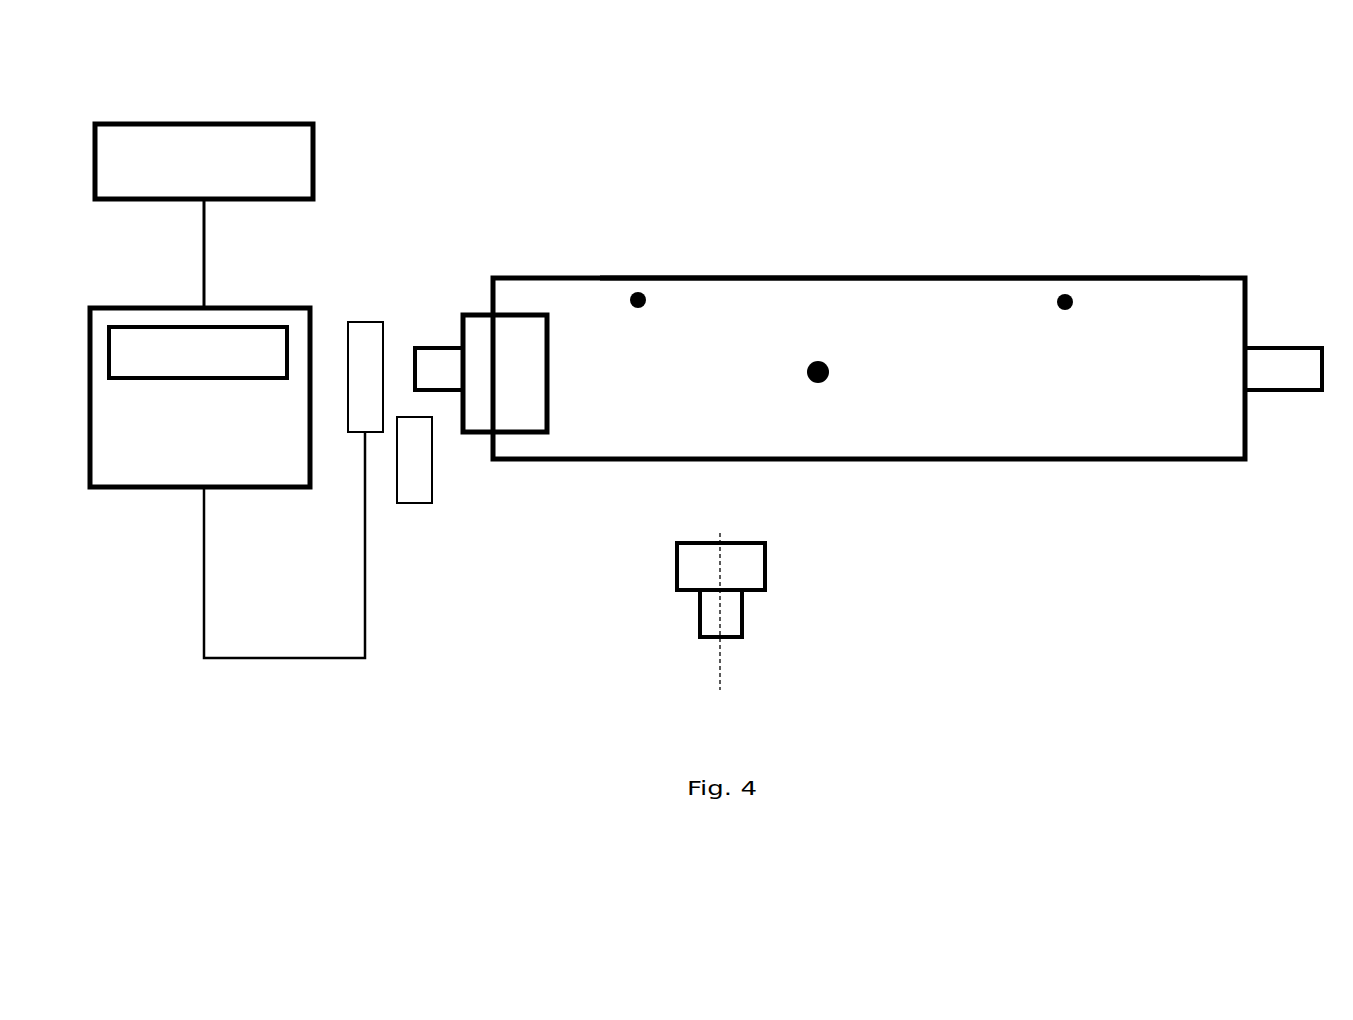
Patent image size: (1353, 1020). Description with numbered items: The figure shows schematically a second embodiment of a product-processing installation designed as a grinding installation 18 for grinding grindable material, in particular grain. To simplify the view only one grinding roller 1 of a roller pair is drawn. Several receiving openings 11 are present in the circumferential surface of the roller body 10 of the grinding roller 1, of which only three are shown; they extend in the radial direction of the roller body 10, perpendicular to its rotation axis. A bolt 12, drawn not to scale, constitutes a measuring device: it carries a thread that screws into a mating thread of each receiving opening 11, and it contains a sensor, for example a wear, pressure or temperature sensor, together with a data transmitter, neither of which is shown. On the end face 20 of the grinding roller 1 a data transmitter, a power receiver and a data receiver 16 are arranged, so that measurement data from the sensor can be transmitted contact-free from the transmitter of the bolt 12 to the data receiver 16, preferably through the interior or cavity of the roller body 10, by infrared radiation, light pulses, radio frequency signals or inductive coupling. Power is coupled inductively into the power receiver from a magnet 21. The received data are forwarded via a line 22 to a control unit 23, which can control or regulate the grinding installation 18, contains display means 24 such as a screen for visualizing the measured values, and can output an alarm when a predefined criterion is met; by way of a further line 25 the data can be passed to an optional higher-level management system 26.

The grinding roller 1 is at (1258, 338).
The roller body 10 is at (1207, 398).
The receiving openings 11 is at (638, 300).
The bolt 12 is at (790, 575).
The data receiver 16 is at (518, 327).
The grinding installation 18 is at (1276, 260).
The end face 20 is at (468, 262).
The magnet 21 is at (412, 490).
The line 22 is at (302, 658).
The control unit 23 is at (213, 460).
The display means 24 is at (237, 353).
The further line 25 is at (204, 263).
The higher-level management system 26 is at (290, 157).